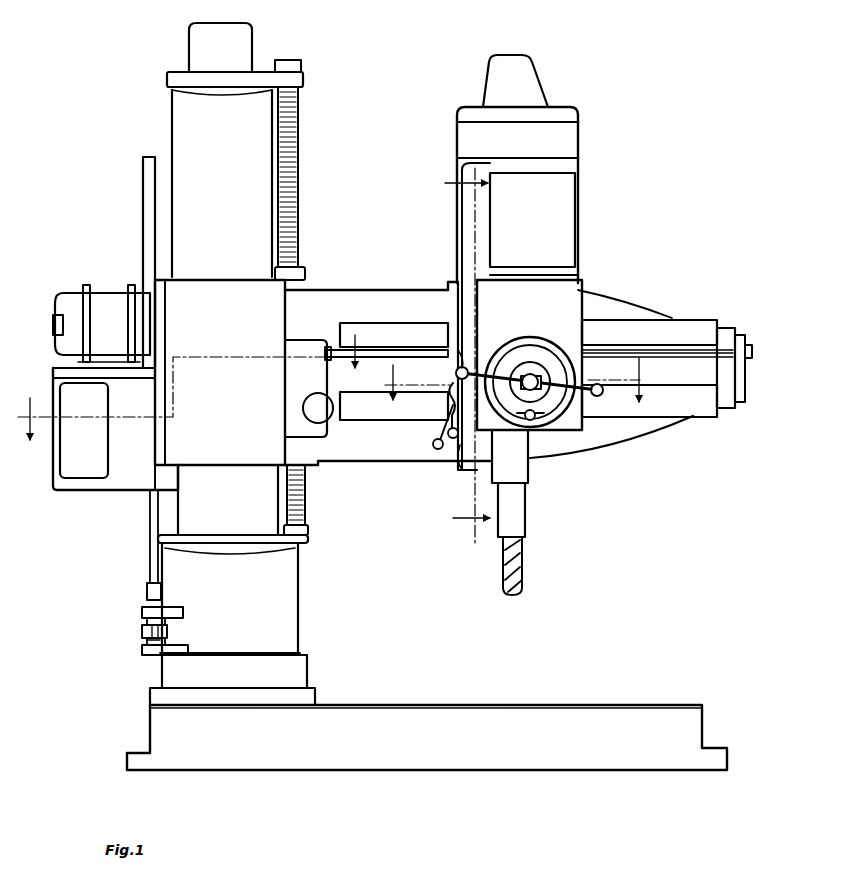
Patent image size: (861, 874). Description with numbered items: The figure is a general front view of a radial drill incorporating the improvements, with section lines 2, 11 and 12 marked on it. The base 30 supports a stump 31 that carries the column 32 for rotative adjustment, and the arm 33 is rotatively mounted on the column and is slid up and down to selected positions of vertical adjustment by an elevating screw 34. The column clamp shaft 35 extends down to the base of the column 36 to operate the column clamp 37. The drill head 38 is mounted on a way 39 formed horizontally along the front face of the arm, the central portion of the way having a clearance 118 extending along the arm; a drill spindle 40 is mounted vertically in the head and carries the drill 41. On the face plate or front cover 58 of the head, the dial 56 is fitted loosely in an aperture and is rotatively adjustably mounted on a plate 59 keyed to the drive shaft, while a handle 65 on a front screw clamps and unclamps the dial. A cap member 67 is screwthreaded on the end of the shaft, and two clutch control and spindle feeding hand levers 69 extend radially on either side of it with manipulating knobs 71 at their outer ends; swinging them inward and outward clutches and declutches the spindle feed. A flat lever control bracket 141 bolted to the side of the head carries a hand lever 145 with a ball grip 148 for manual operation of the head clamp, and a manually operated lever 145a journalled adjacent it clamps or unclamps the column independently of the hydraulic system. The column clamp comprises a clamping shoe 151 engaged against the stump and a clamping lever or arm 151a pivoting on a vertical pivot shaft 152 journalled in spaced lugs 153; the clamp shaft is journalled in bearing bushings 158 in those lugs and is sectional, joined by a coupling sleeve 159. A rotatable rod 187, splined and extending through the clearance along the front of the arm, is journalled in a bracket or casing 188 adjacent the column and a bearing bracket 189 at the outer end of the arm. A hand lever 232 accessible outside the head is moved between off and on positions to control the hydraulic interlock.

The section line 2- 2 is at (512, 380).
The section line 11- 11 is at (457, 361).
The section line 12- 12 is at (198, 385).
The base 30 is at (405, 703).
The stump 31 is at (297, 672).
The column 32 is at (263, 513).
The arm 33 is at (391, 297).
The elevating screw 34 is at (302, 222).
The column clamp shaft 35 is at (148, 551).
The base of the column 36 is at (284, 613).
The column clamp 37 is at (146, 641).
The drill head 38 is at (564, 245).
The way 39 is at (652, 325).
The drill spindle 40 is at (518, 473).
The drill 41 is at (522, 570).
The dial 56 is at (521, 344).
The face plate or front cover 58 is at (562, 296).
The plate 59 is at (535, 362).
The handle 65 is at (537, 421).
The cap member 67 is at (546, 377).
The clutch control and spindle feeding hand levers 69 is at (470, 385).
The manipulating knobs 71 is at (462, 368).
The clearance 118 is at (601, 400).
The lever control bracket 141 is at (450, 388).
The hand lever 145 is at (445, 428).
The manually operated lever 145a is at (452, 462).
The ball grip 148 is at (434, 446).
The clamping shoe 151 is at (168, 632).
The clamping lever or arm 151a is at (145, 640).
The pivot shaft 152 is at (147, 622).
The lugs 153 is at (147, 655).
The bearing bushings 158 is at (142, 612).
The coupling sleeve 159 is at (146, 597).
The rotatable rod 187 is at (726, 350).
The bracket or casing 188 is at (297, 352).
The bearing bracket 189 is at (742, 396).
The hand lever 232 is at (386, 345).